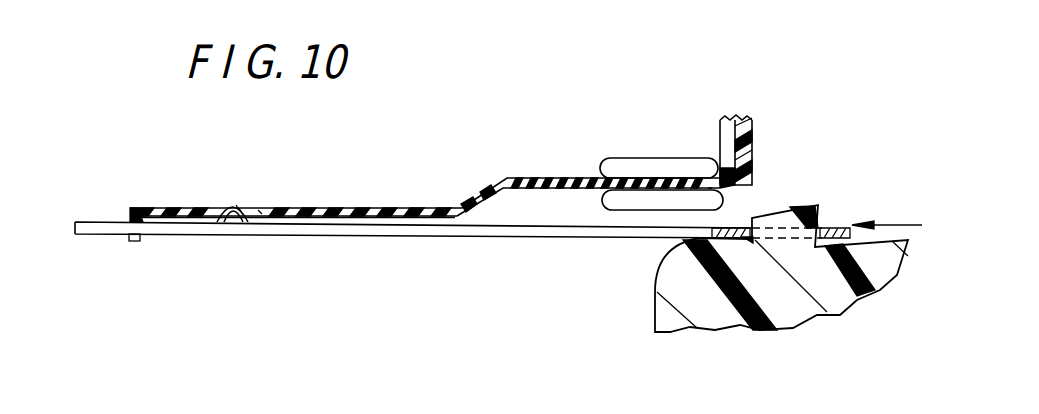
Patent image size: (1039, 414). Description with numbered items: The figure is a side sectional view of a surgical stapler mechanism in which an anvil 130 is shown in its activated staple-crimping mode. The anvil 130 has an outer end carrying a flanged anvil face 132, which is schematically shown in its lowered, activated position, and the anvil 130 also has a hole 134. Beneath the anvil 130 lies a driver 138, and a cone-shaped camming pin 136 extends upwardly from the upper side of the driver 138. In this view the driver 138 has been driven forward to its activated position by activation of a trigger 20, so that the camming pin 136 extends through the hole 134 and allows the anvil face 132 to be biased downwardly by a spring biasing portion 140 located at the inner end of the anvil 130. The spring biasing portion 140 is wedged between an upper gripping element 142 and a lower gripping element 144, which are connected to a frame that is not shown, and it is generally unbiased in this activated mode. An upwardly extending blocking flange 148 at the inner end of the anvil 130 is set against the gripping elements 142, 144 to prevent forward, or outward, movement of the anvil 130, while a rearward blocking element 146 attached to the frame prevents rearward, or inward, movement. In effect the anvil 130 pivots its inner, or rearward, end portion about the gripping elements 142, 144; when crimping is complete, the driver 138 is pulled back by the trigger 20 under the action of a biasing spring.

The trigger 20 is at (842, 297).
The anvil 130 is at (377, 209).
The flanged anvil face 132 is at (128, 212).
The hole 134 is at (272, 208).
The cone-shaped camming pin 136 is at (229, 219).
The driver 138 is at (281, 231).
The spring biasing portion 140 is at (588, 180).
The upper gripping element 142 is at (663, 158).
The lower gripping element 144 is at (660, 204).
The rearward blocking element 146 is at (746, 120).
The blocking flange 148 is at (720, 152).